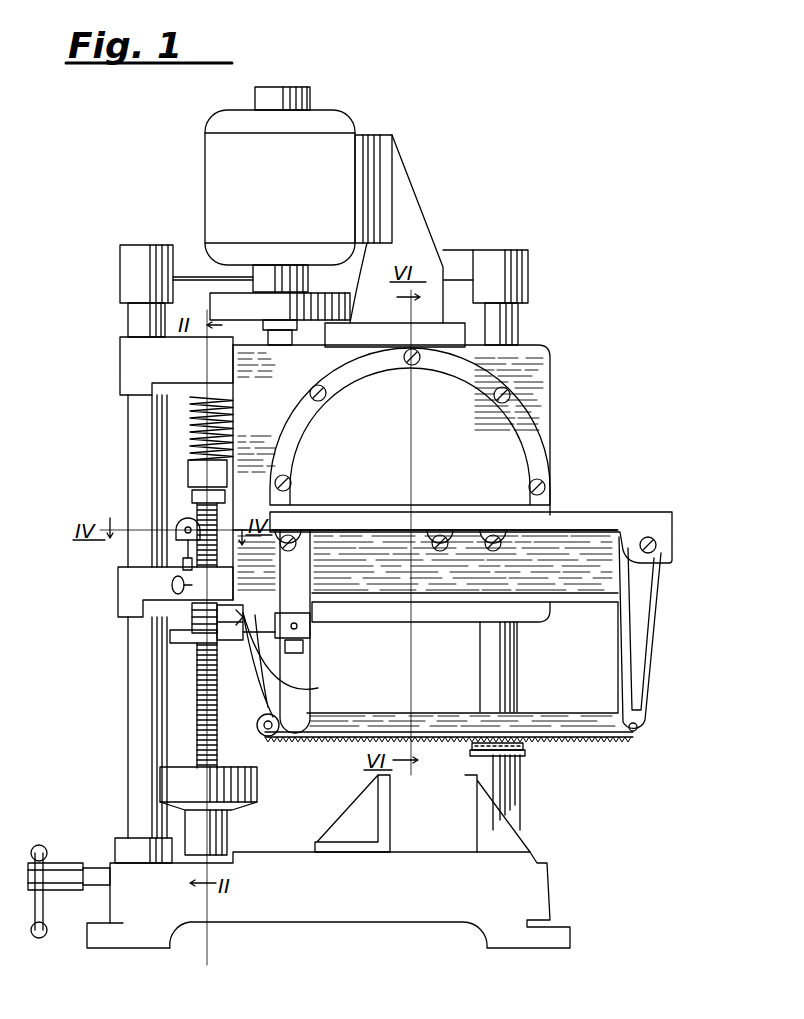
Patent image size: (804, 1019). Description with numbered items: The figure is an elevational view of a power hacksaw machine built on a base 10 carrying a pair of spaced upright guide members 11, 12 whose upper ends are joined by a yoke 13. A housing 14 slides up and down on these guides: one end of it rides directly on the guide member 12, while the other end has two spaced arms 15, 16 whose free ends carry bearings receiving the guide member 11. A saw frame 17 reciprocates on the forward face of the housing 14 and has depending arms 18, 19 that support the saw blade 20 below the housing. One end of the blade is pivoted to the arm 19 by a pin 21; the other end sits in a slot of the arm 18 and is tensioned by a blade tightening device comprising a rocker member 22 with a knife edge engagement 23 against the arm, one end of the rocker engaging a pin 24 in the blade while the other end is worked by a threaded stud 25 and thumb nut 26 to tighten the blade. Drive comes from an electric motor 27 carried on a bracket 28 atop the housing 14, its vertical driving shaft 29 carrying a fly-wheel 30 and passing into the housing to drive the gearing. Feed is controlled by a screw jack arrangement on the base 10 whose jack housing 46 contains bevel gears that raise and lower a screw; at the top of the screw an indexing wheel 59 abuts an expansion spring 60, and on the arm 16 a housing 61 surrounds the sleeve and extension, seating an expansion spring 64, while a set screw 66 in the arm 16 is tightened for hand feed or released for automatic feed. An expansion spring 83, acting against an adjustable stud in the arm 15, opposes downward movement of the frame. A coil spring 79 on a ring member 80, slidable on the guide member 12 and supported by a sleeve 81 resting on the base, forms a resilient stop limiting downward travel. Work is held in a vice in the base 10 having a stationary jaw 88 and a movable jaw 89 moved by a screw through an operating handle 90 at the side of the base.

The base 10 is at (532, 900).
The guide member 11 is at (140, 703).
The guide member 12 is at (503, 672).
The yoke 13 is at (455, 260).
The housing 14 is at (540, 383).
The arm 15 is at (160, 362).
The arm 16 is at (140, 582).
The saw frame 17 is at (585, 550).
The depending arm 18 is at (298, 663).
The depending arm 19 is at (637, 642).
The saw blade 20 is at (432, 723).
The pin 21 is at (640, 727).
The rocker member 22 is at (262, 672).
The knife edge engagement 23 is at (295, 656).
The pin 24 is at (268, 736).
The threaded stud 25 is at (241, 645).
The thumb nut 26 is at (232, 623).
The electric motor 27 is at (298, 189).
The bracket 28 is at (413, 223).
The driving shaft 29 is at (280, 333).
The fly-wheel 30 is at (347, 307).
The jack housing 46 is at (172, 783).
The indexing wheel 59 is at (190, 635).
The expansion spring 60 is at (190, 617).
The housing 61 is at (177, 547).
The expansion spring 64 is at (190, 497).
The set screw 66 is at (190, 585).
The coil spring 79 is at (523, 752).
The ring member 80 is at (512, 768).
The sleeve 81 is at (507, 800).
The expansion spring 83 is at (193, 438).
The stationary jaw 88 is at (493, 837).
The movable jaw 89 is at (350, 827).
The operating handle 90 is at (57, 877).